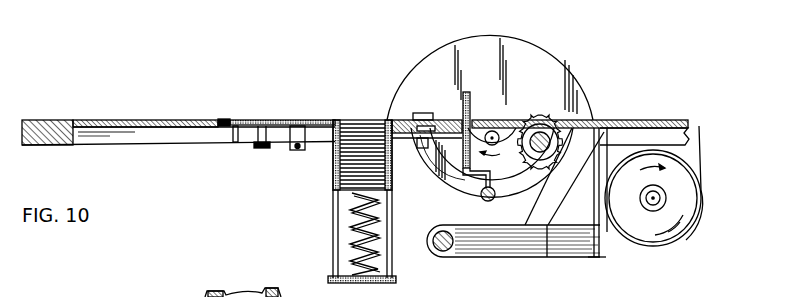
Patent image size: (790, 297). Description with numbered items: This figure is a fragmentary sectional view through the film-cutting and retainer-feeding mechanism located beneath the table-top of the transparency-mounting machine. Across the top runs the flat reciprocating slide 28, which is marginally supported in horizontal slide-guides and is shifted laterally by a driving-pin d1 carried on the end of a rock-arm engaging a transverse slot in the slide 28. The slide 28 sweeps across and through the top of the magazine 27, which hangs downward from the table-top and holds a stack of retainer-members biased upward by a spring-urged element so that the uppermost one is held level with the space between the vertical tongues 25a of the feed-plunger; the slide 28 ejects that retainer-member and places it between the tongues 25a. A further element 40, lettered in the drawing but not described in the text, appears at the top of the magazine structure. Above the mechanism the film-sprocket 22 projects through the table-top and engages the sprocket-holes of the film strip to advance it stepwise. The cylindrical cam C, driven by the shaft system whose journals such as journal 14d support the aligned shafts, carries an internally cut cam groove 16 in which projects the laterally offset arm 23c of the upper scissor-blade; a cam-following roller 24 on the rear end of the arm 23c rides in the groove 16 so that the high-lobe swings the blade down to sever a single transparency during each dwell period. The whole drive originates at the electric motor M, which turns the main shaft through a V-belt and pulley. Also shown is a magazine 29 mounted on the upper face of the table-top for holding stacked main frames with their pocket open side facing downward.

The flat reciprocating slide 28 is at (275, 120).
The driving-pin d1 is at (213, 180).
The coil block 40 is at (360, 120).
The magazine 27 is at (333, 203).
The vertical tongues 25a is at (420, 113).
The film-sprocket 22 is at (556, 120).
The cylindrical cam C is at (512, 222).
The cam groove 16 is at (521, 197).
The cam-following roller 24 is at (488, 201).
The laterally offset arm 23c is at (460, 172).
The journal 14d is at (443, 252).
The electric motor M is at (660, 245).
The magazine 29 is at (210, 293).